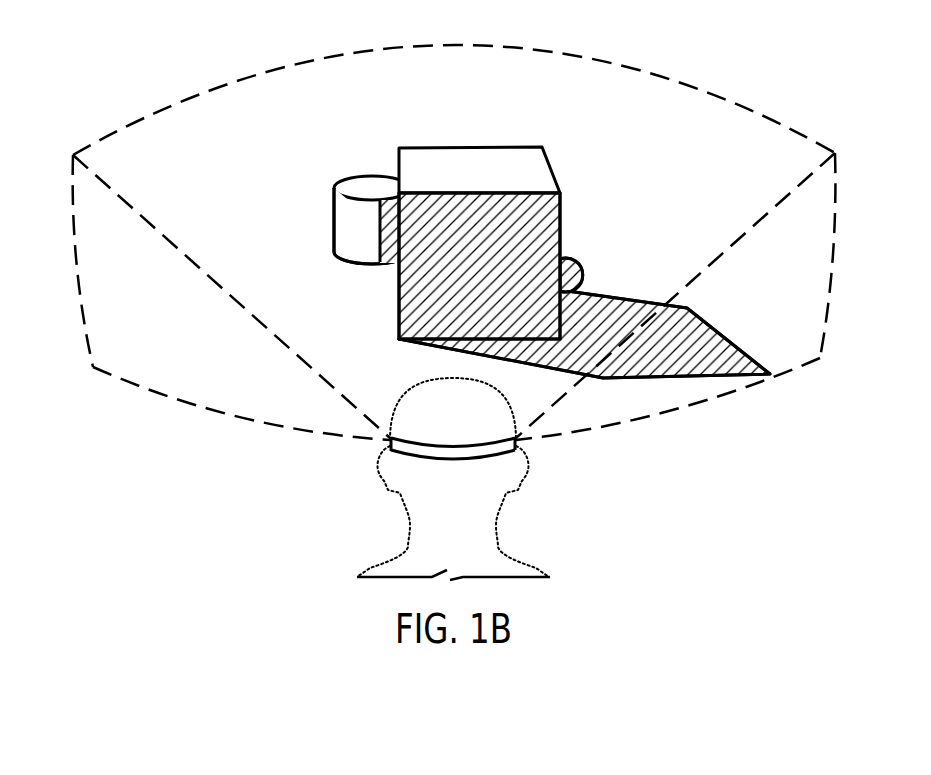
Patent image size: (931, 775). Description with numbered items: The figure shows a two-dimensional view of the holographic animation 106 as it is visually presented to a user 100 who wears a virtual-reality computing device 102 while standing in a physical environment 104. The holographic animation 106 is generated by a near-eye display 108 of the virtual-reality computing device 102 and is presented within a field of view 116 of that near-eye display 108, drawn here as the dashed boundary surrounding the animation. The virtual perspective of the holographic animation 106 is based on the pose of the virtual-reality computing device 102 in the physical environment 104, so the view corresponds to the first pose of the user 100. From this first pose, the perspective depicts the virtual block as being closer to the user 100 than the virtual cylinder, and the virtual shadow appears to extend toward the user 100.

The user 100 is at (468, 489).
The virtual-reality computing device 102 is at (551, 461).
The physical environment 104 is at (284, 146).
The holographic animation 106 is at (581, 157).
The near-eye display 108 is at (391, 441).
The field of view 116 is at (670, 78).